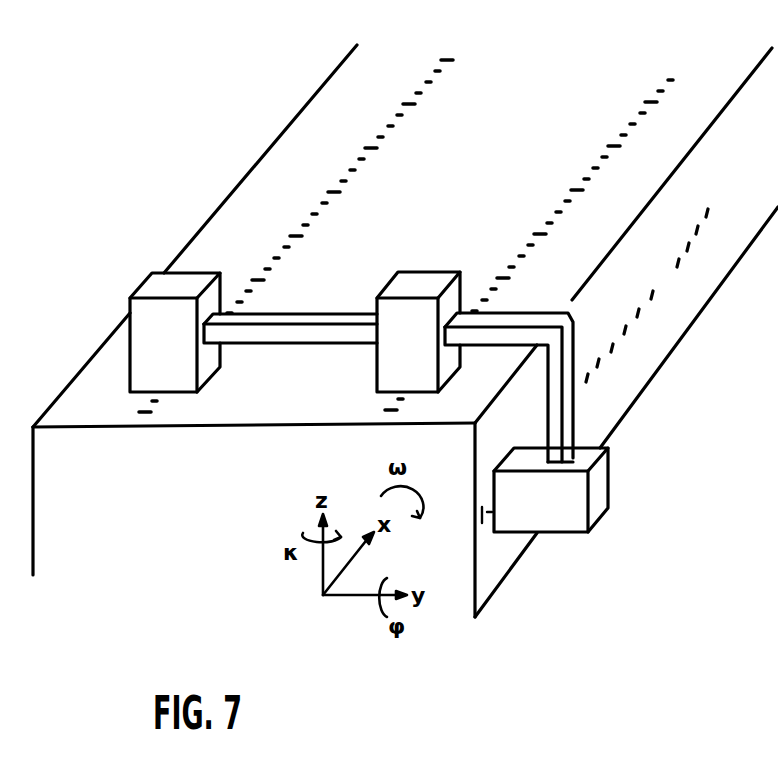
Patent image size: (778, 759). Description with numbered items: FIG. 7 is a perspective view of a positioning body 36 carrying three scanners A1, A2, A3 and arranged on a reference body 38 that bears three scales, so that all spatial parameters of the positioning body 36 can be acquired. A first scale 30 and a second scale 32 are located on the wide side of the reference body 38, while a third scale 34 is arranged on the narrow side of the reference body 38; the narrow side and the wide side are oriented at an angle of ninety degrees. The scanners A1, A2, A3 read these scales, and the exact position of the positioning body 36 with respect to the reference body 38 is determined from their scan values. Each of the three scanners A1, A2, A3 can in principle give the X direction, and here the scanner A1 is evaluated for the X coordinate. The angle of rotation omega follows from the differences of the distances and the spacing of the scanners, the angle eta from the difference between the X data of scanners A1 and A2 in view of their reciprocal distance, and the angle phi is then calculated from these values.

The first scale 30 is at (617, 141).
The second scale 32 is at (426, 93).
The third scale 34 is at (667, 270).
The positioning body 36 is at (573, 415).
The reference body 38 is at (226, 412).
The scanner A1 is at (418, 280).
The scanner A2 is at (165, 280).
The scanner A3 is at (550, 513).